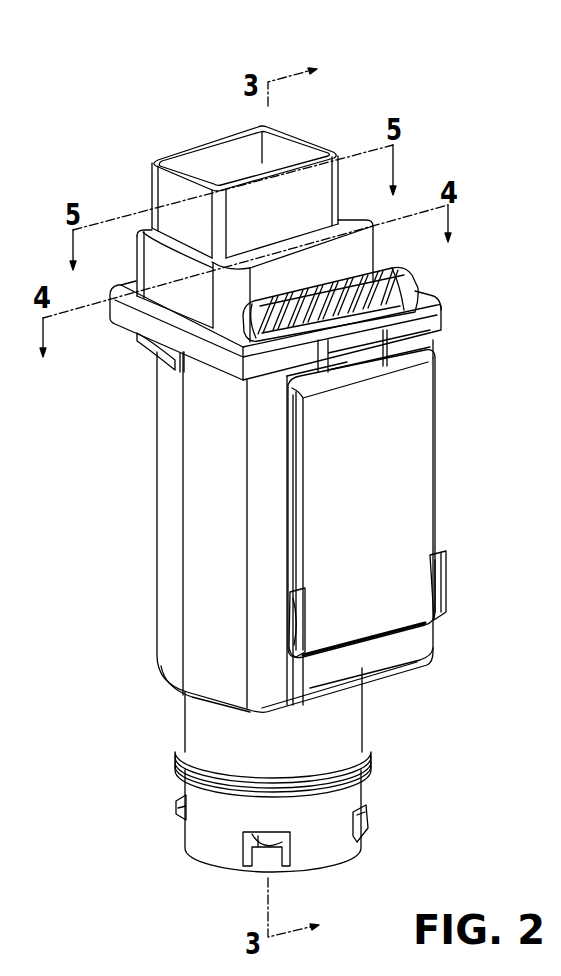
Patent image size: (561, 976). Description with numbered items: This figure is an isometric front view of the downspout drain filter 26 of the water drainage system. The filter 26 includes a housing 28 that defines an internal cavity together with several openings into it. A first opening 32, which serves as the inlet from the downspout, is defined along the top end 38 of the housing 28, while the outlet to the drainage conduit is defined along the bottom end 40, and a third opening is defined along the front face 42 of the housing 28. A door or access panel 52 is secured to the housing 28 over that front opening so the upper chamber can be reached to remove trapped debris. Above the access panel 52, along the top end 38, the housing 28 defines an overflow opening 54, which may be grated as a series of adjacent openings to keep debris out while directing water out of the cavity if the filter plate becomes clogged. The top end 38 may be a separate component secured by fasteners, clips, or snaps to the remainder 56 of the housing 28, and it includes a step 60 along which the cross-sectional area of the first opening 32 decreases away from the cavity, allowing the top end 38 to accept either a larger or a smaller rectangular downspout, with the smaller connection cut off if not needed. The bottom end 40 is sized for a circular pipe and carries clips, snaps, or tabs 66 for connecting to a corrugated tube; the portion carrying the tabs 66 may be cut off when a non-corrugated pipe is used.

The filter 26 is at (143, 99).
The housing 28 is at (158, 490).
The first opening 32 is at (234, 176).
The top end 38 is at (170, 187).
The bottom end 40 is at (205, 836).
The front face 42 is at (394, 658).
The access panel 52 is at (383, 500).
The overflow opening 54 is at (398, 288).
The remainder of the housing 56 is at (213, 590).
The step 60 is at (348, 221).
The tabs 66 is at (181, 803).